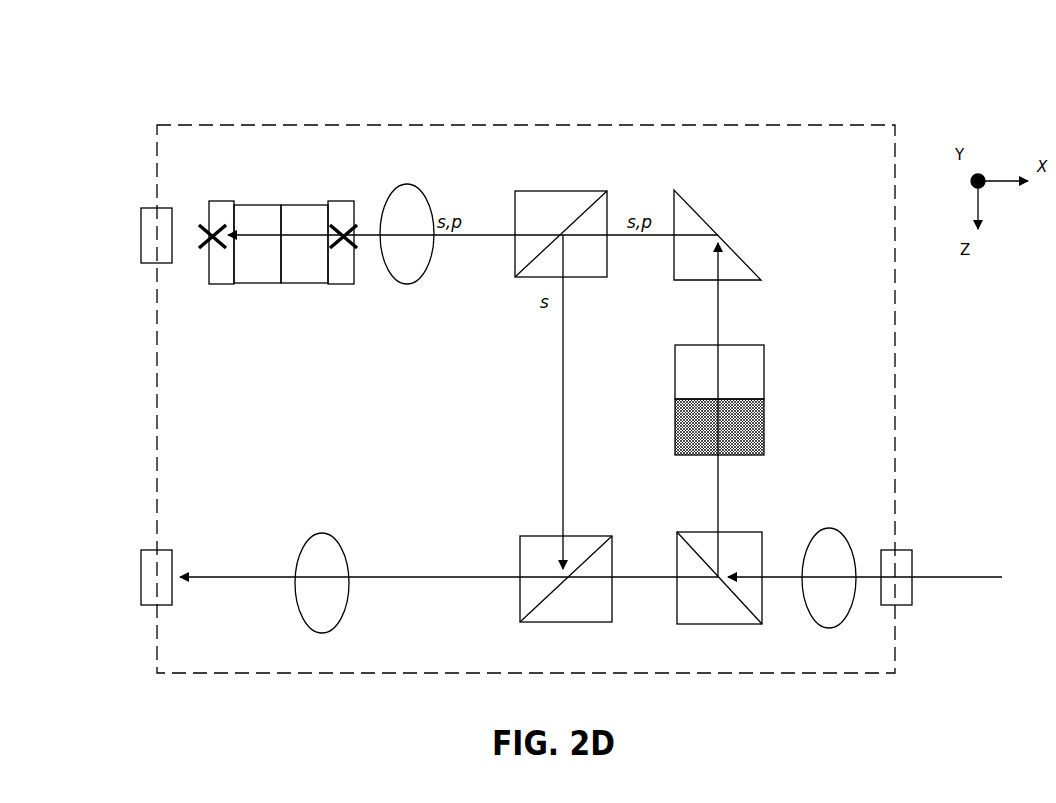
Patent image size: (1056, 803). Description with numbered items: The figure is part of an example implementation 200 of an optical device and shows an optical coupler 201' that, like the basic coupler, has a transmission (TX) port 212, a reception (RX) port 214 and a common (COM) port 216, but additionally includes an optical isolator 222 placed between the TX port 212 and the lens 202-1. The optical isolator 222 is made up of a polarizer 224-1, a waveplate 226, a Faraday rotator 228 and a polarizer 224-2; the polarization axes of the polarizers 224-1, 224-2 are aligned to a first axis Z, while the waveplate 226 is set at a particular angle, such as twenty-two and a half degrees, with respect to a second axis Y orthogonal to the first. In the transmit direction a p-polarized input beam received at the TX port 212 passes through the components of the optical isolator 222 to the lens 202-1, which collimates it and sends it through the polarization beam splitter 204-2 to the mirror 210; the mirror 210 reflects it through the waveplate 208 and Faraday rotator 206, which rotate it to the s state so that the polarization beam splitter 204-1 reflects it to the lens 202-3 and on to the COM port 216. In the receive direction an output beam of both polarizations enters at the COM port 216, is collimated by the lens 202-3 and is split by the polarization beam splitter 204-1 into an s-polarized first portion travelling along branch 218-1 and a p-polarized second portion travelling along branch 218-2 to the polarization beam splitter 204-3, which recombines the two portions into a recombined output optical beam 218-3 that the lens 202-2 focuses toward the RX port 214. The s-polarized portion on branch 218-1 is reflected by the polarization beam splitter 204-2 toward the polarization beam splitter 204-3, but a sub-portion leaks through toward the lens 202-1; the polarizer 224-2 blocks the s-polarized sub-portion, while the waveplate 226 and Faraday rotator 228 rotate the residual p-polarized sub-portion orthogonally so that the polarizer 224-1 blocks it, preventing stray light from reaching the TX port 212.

The example implementation 200 is at (152, 44).
The optical coupler 201' is at (526, 378).
The lens 202-1 is at (421, 188).
The lens 202-2 is at (323, 533).
The lens 202-3 is at (853, 550).
The polarization beam splitter 204-1 is at (750, 532).
The polarization beam splitter 204-2 is at (562, 190).
The polarization beam splitter 204-3 is at (557, 535).
The Faraday rotator 206 is at (747, 413).
The waveplate 208 is at (746, 359).
The mirror 210 is at (732, 246).
The transmission (TX) port 212 is at (141, 250).
The reception (RX) port 214 is at (141, 590).
The common (COM) port 216 is at (912, 592).
The branch of output optical path 218-1 is at (718, 482).
The branch of output optical path 218-2 is at (645, 578).
The recombined output optical beam 218-3 is at (407, 578).
The optical isolator 222 is at (285, 226).
The polarizer 224-1 is at (211, 284).
The polarizer 224-2 is at (350, 284).
The waveplate 226 is at (264, 284).
The Faraday rotator 228 is at (306, 284).